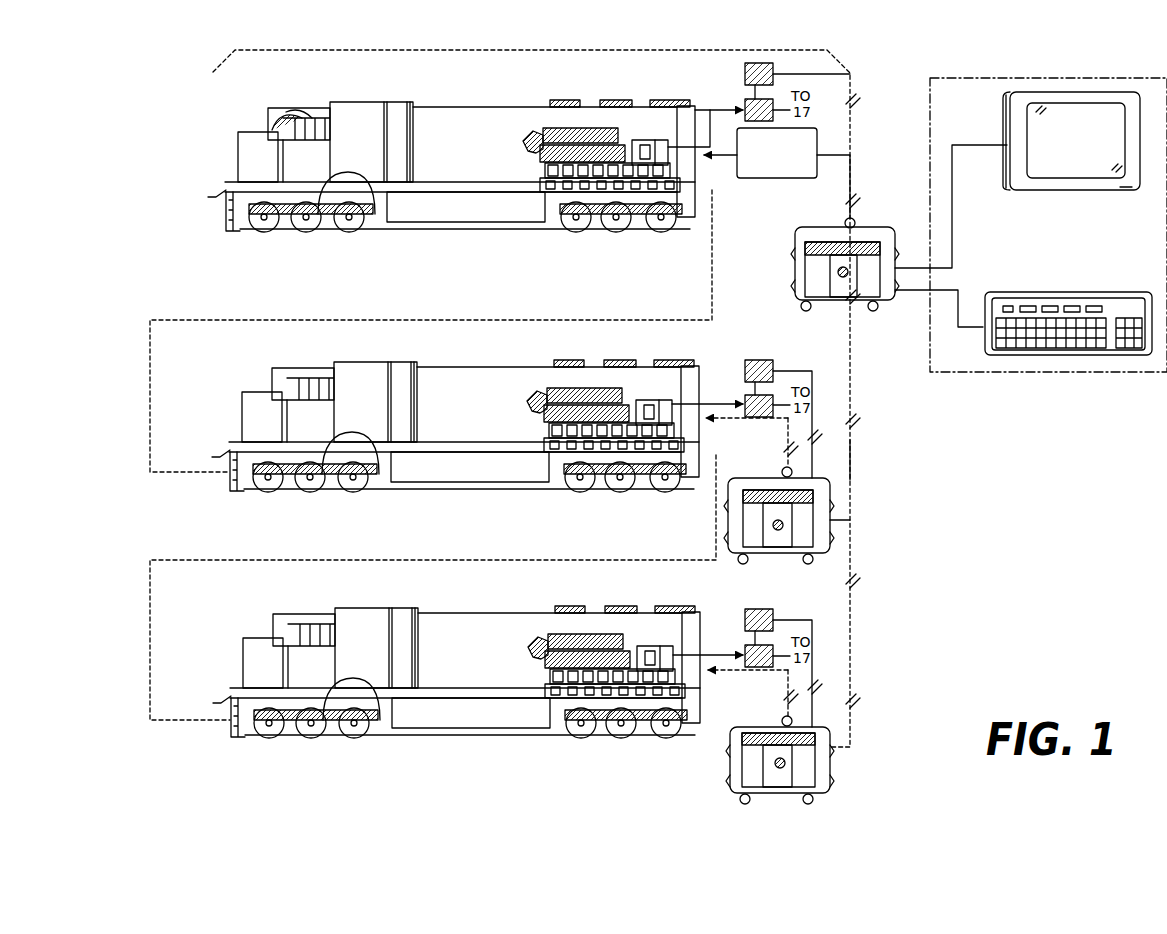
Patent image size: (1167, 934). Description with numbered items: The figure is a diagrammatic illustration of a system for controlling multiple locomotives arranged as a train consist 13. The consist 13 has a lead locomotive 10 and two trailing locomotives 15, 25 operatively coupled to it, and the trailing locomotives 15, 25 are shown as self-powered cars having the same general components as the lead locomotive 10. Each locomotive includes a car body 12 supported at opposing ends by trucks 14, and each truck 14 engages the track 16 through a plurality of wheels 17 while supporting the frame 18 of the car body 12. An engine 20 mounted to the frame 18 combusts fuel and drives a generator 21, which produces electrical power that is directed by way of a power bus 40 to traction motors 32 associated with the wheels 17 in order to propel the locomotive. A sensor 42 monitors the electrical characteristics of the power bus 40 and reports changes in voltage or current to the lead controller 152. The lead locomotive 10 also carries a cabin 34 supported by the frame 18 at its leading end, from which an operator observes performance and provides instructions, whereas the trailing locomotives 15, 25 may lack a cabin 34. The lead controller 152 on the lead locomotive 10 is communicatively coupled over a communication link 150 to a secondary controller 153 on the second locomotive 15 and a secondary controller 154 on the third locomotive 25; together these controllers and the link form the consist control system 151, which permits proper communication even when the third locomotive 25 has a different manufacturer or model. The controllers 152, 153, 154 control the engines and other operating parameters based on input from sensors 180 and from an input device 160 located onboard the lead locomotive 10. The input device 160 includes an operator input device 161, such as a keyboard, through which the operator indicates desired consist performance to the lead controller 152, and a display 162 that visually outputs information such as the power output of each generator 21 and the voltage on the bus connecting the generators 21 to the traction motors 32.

The lead locomotive 10 is at (467, 173).
The car body 12 is at (363, 102).
The train consist 13 is at (556, 48).
The truck 14 is at (318, 246).
The trailing locomotive 15 is at (377, 363).
The track 16 is at (382, 236).
The wheel 17 is at (349, 172).
The frame 18 is at (205, 196).
The engine 20 is at (579, 128).
The generator 21 is at (644, 140).
The trailing locomotive 25 is at (375, 608).
The traction motor 32 is at (250, 240).
The cabin 34 is at (268, 127).
The power bus 40 is at (729, 116).
The sensor 42 is at (797, 74).
The communication link 150 is at (850, 460).
The consist control system 151 is at (938, 574).
The lead controller 152 is at (854, 227).
The secondary controller 153 is at (822, 478).
The secondary controller 154 is at (822, 721).
The input device 160 is at (928, 130).
The operator input device 161 is at (1135, 292).
The display 162 is at (1096, 137).
The sensor 180 is at (775, 178).